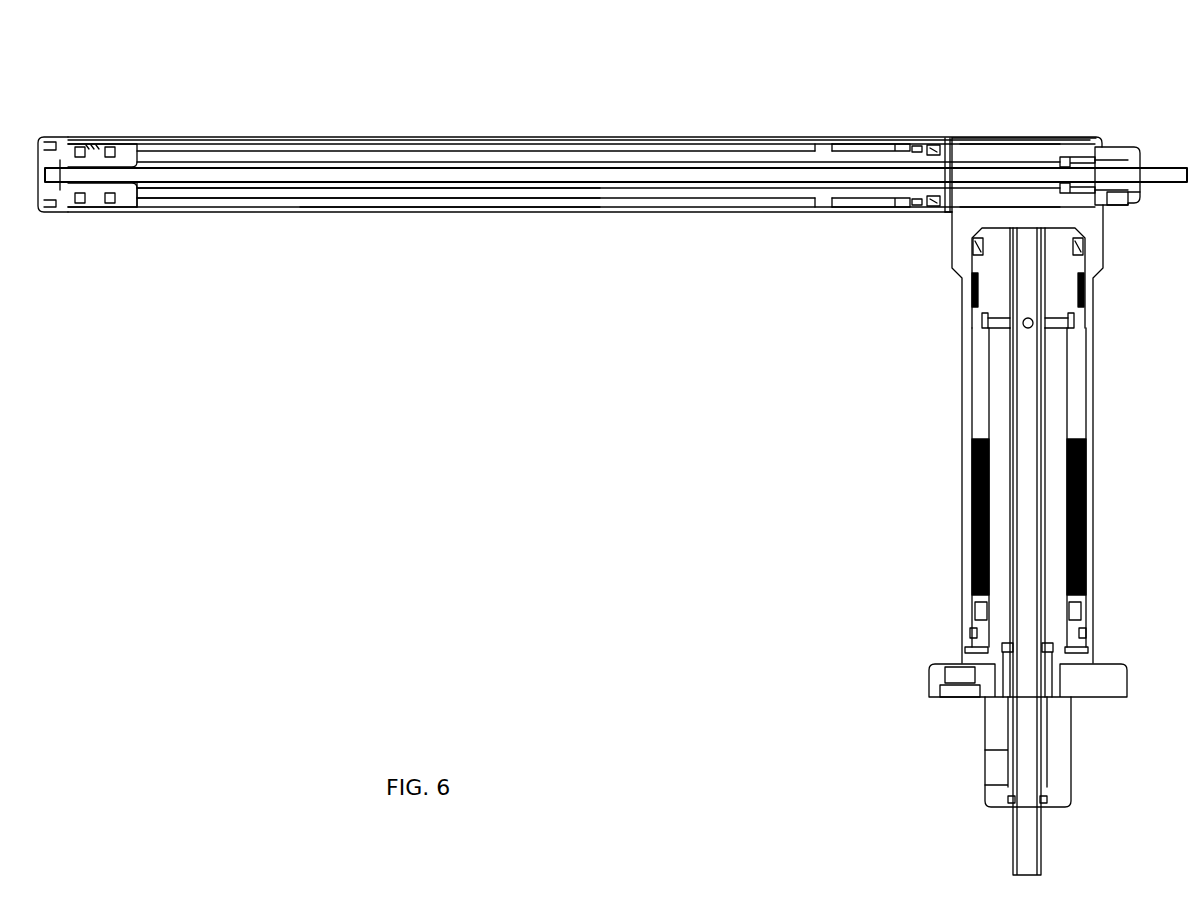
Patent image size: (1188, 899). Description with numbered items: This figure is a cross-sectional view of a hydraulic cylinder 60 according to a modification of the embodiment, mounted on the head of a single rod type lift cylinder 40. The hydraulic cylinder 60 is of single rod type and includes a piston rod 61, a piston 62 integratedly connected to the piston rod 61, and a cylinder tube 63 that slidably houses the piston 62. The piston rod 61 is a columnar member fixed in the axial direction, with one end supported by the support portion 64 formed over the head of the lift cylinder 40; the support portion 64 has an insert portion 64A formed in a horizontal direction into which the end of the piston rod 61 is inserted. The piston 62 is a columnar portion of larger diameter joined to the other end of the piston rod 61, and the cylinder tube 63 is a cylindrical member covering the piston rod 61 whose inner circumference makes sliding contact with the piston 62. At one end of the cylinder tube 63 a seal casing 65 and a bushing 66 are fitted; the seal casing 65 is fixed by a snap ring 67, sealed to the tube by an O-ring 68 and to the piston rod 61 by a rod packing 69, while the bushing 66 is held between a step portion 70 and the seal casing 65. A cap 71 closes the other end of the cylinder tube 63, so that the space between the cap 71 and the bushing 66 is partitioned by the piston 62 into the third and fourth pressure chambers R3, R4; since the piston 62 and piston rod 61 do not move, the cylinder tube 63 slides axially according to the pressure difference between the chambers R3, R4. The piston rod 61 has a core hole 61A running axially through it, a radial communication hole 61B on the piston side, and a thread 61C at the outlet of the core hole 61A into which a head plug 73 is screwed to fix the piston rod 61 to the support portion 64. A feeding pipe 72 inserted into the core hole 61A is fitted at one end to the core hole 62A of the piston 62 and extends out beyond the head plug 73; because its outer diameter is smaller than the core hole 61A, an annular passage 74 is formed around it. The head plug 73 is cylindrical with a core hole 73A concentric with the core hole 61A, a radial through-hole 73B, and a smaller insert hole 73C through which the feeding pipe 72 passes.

The lift cylinder 40 is at (1121, 415).
The hydraulic cylinder 60 is at (744, 77).
The piston rod 61 is at (538, 157).
The core hole 61A is at (300, 190).
The communication hole 61B is at (141, 196).
The thread 61C is at (1078, 157).
The piston 62 is at (121, 147).
The core hole of the piston 62A is at (95, 200).
The cylinder tube 63 is at (420, 137).
The support portion 64 is at (1010, 140).
The insert portion 64A is at (975, 142).
The seal casing 65 is at (933, 145).
The bushing 66 is at (848, 149).
The snap ring 67 is at (946, 140).
The O-ring 68 is at (918, 146).
The rod packing 69 is at (937, 210).
The step portion 70 is at (815, 142).
The cap 71 is at (60, 152).
The feeding pipe 72 is at (1165, 166).
The head plug 73 is at (1137, 148).
The core hole of the head plug 73A is at (1118, 162).
The through-hole 73B is at (1118, 204).
The insert hole 73C is at (1138, 192).
The annular passage 74 is at (363, 190).
The third pressure chamber R3 is at (64, 197).
The fourth pressure chamber R4 is at (505, 205).